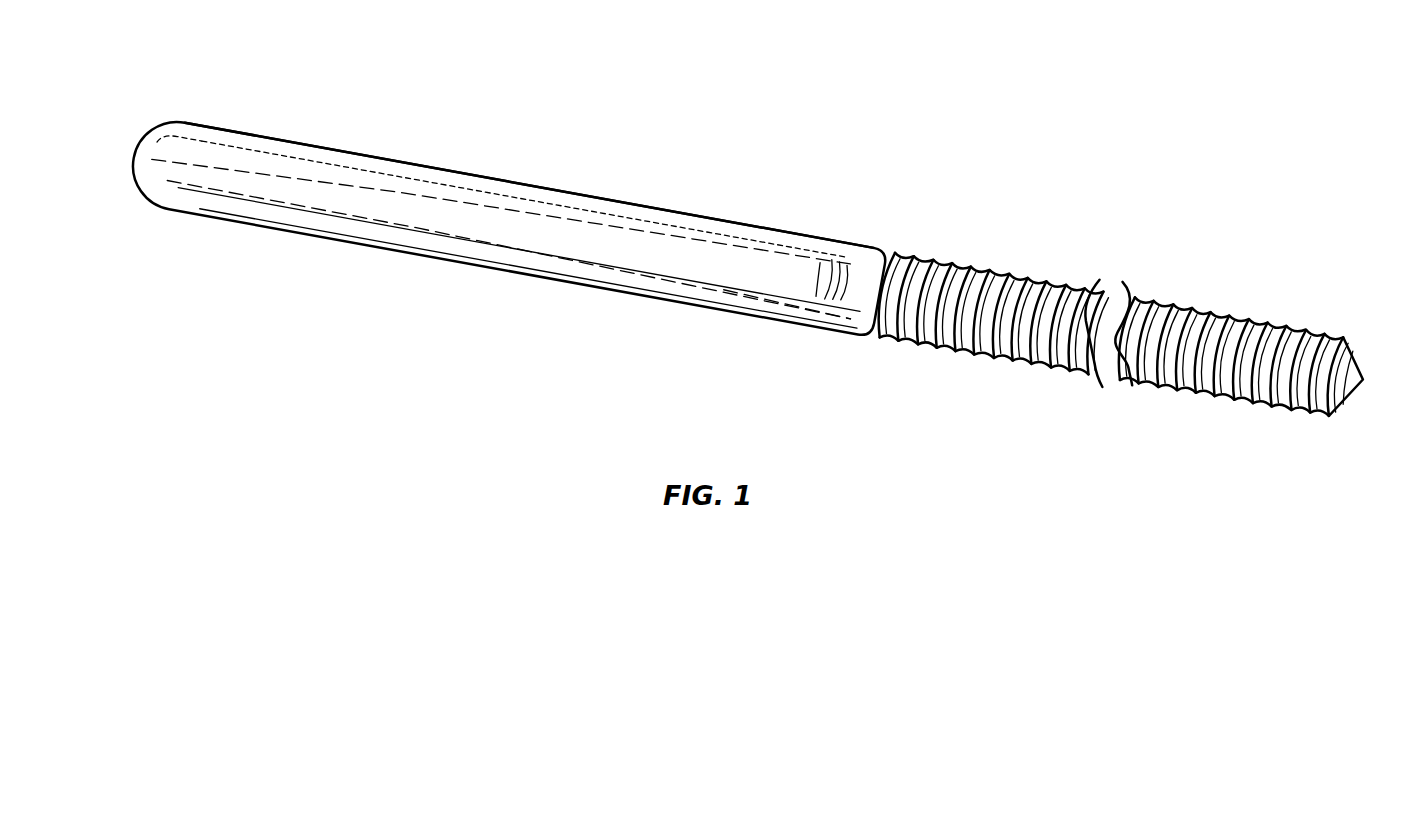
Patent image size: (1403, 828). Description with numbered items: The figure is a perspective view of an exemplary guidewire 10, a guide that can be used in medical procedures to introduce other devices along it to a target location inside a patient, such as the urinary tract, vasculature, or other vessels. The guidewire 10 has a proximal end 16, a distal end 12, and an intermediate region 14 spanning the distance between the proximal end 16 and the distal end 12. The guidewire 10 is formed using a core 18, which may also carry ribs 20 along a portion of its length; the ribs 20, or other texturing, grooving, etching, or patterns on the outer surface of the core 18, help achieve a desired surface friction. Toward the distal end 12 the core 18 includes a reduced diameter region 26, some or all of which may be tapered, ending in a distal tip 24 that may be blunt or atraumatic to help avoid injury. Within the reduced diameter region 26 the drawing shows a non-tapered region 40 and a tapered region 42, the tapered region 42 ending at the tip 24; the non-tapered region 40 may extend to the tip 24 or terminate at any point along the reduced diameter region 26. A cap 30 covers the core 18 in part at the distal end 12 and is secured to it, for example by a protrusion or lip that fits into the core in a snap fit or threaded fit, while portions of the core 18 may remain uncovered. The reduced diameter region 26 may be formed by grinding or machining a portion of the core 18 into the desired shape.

The guidewire 10 is at (850, 87).
The distal end 12 is at (170, 218).
The intermediate region 14 is at (1054, 266).
The proximal end 16 is at (1322, 310).
The core 18 is at (976, 355).
The ribs 20 is at (897, 256).
The distal tip 24 is at (150, 173).
The reduced diameter region 26 is at (583, 204).
The cap 30 is at (482, 182).
The non-tapered region 40 is at (773, 285).
The tapered region 42 is at (490, 235).